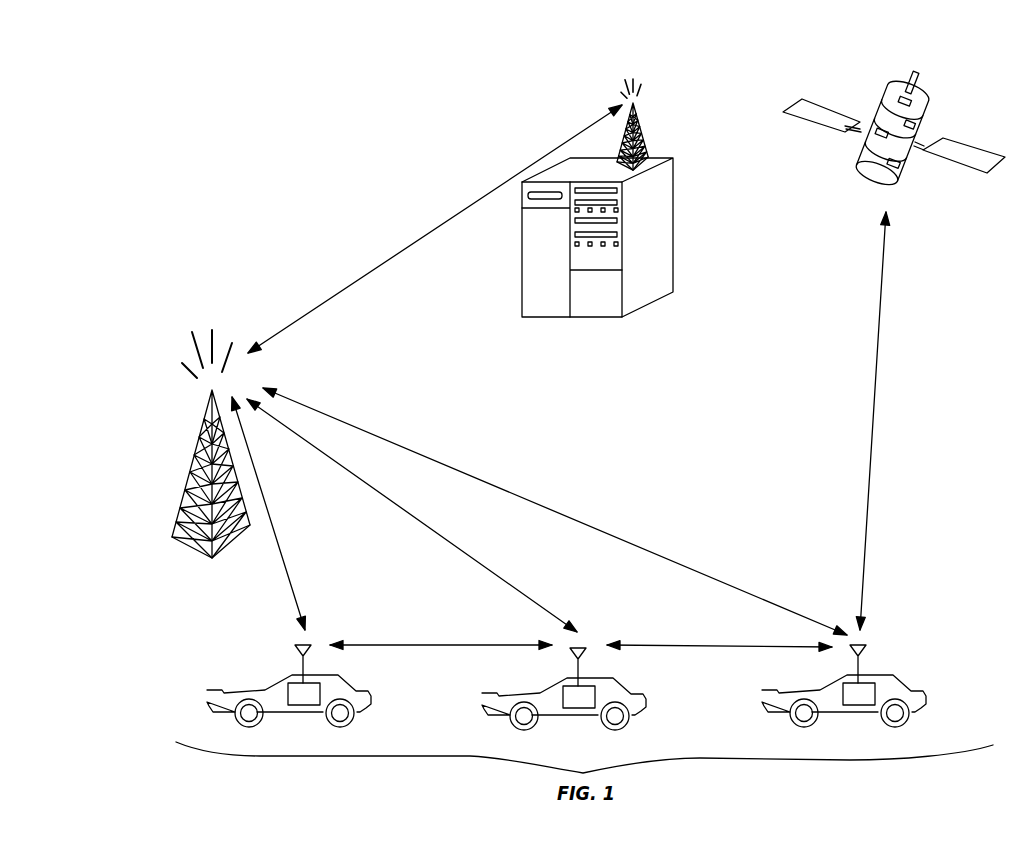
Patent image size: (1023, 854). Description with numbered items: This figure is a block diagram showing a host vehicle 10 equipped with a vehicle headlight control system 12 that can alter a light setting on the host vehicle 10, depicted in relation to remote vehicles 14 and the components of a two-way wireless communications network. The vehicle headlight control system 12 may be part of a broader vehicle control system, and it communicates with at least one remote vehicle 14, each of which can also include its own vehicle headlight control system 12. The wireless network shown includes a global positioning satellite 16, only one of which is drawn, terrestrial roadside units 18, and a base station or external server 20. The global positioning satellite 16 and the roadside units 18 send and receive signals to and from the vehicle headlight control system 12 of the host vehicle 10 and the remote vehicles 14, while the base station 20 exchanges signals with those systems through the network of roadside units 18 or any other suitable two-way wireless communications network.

The host vehicle 10 is at (523, 690).
The vehicle headlight control system 12 is at (303, 705).
The remote vehicle 14 is at (277, 683).
The global positioning satellite 16 is at (870, 80).
The roadside unit 18 is at (183, 558).
The base station 20 is at (522, 263).